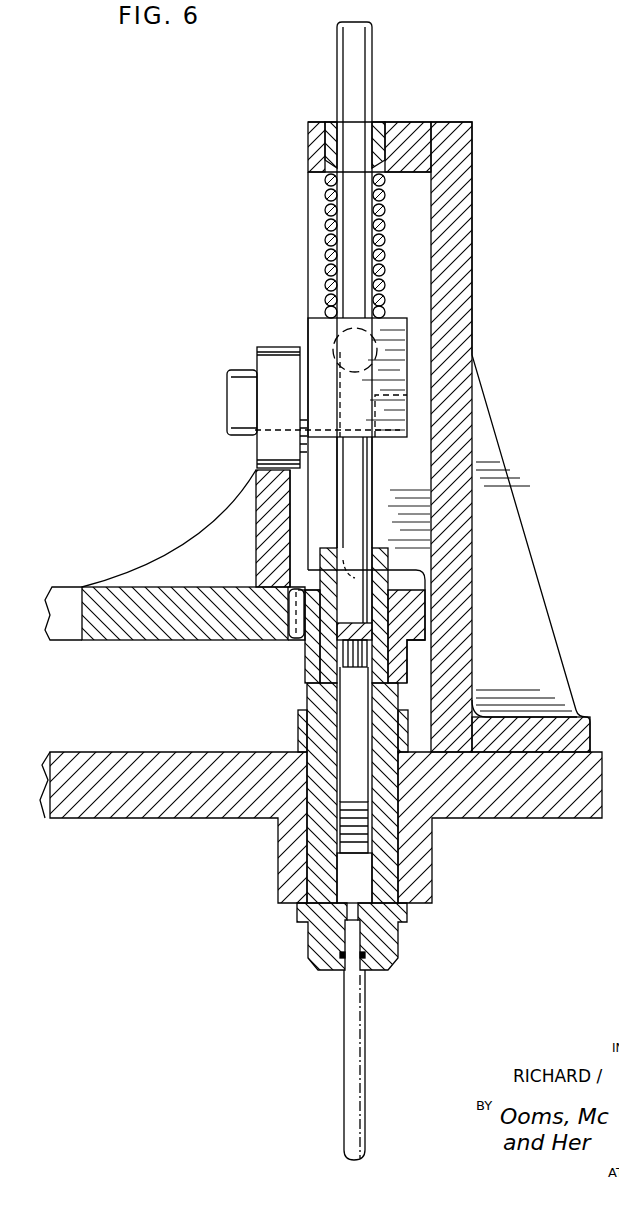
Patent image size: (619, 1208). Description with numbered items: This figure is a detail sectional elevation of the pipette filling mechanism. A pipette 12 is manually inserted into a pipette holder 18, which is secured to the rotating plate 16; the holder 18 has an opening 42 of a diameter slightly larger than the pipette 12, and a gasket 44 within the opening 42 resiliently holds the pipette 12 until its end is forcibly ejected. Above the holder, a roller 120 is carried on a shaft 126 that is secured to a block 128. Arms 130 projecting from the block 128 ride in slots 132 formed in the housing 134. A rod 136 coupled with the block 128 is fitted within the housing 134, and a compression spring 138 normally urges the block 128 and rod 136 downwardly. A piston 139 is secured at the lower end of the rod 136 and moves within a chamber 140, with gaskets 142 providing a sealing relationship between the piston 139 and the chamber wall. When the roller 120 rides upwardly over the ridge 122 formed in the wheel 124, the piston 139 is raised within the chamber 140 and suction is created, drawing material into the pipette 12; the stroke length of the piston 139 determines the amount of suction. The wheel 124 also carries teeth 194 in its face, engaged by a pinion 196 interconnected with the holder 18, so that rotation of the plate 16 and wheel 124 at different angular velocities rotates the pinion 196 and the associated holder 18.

The pipette 12 is at (345, 1082).
The plate 16 is at (107, 805).
The pipette holder 18 is at (318, 940).
The opening 42 is at (358, 930).
The gasket 44 is at (365, 965).
The roller 120 is at (278, 347).
The ridge 122 is at (233, 518).
The wheel 124 is at (70, 632).
The shaft 126 is at (400, 430).
The block 128 is at (322, 340).
The arm 130 is at (343, 349).
The slot 132 is at (367, 479).
The housing 134 is at (458, 300).
The rod 136 is at (355, 93).
The compression spring 138 is at (330, 268).
The piston 139 is at (345, 703).
The chamber 140 is at (362, 872).
The gasket 142 is at (350, 832).
The teeth 194 is at (297, 641).
The pinion 196 is at (400, 657).